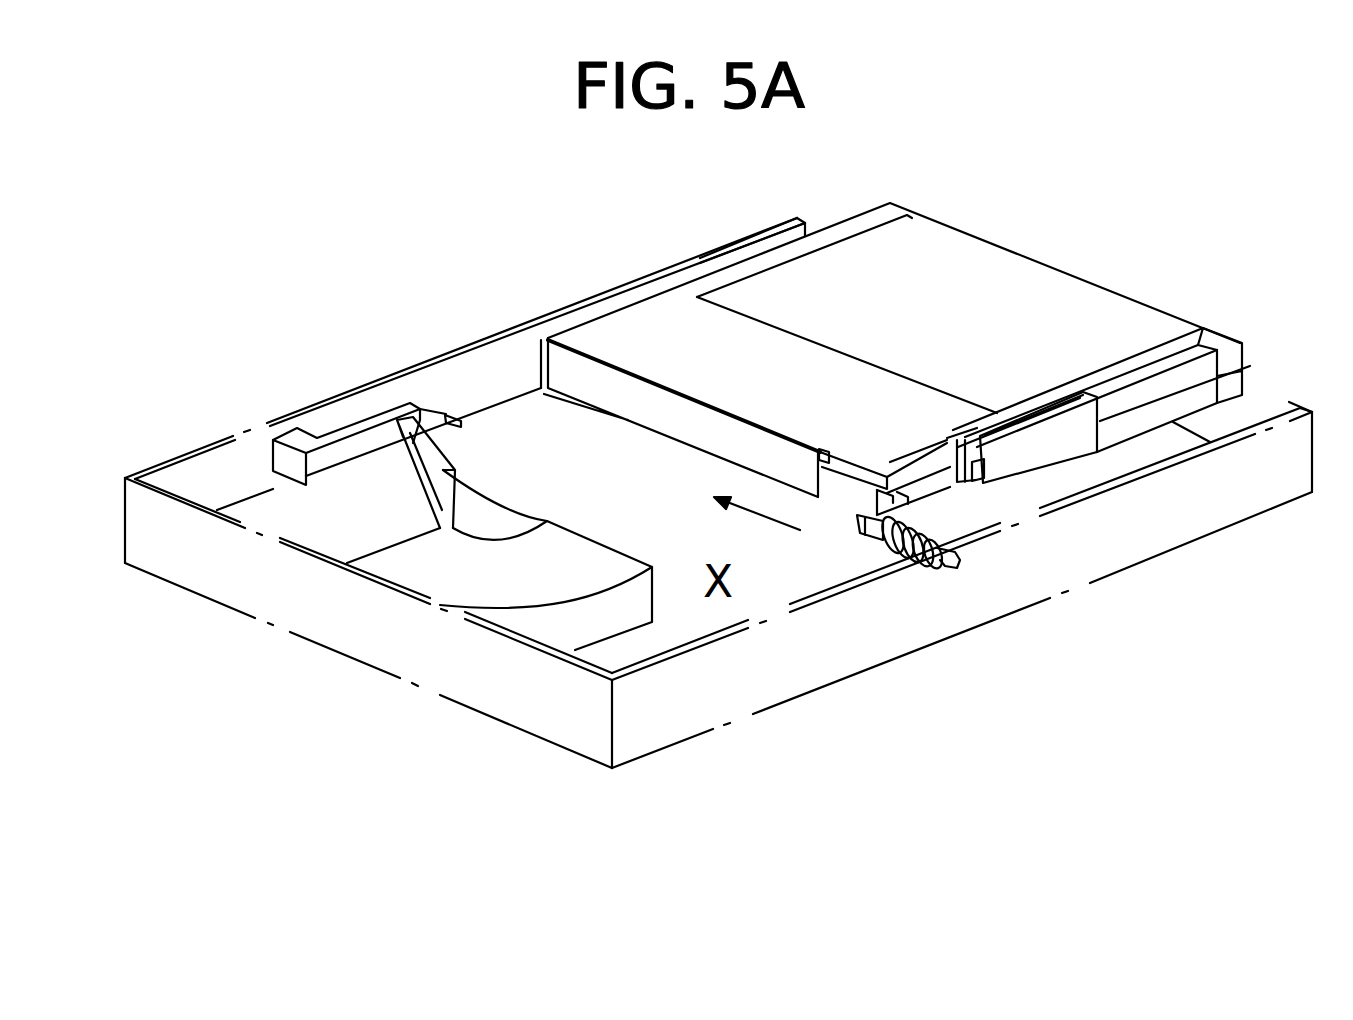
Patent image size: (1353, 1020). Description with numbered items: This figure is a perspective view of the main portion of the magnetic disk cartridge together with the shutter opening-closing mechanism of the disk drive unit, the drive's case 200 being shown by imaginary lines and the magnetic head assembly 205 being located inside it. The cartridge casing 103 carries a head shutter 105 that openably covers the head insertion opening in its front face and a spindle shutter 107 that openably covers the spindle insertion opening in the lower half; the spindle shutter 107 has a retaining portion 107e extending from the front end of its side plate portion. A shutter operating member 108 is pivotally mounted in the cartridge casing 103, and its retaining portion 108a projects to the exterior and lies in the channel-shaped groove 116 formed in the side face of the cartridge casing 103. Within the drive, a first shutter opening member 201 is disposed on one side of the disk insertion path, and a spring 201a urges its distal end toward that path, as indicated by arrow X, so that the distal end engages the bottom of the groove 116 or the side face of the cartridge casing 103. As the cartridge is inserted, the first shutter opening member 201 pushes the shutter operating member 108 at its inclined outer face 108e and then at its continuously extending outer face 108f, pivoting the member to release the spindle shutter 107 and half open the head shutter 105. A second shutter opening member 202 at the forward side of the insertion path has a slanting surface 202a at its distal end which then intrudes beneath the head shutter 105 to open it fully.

The cartridge casing 103 is at (667, 280).
The head shutter 105 is at (643, 412).
The spindle shutter 107 is at (1068, 450).
The retaining portion 107e is at (973, 465).
The shutter operating member 108 is at (960, 488).
The retaining portion 108a is at (973, 445).
The inclined outer face 108e is at (945, 458).
The outer face 108f is at (993, 527).
The groove 116 is at (860, 500).
The case 200 is at (812, 668).
The first shutter opening member 201 is at (870, 520).
The spring 201a is at (938, 548).
The second shutter opening member 202 is at (350, 453).
The slanting surface 202a is at (427, 413).
The magnetic head assembly 205 is at (400, 589).